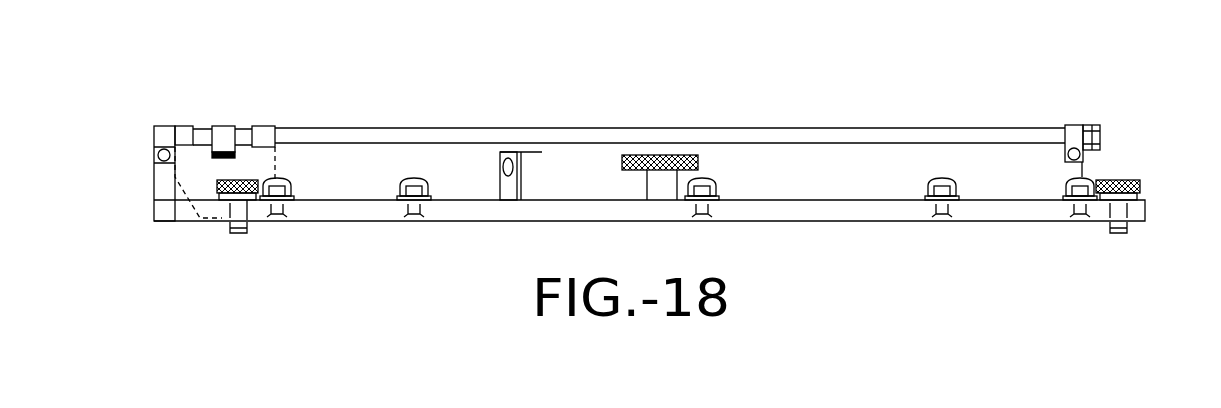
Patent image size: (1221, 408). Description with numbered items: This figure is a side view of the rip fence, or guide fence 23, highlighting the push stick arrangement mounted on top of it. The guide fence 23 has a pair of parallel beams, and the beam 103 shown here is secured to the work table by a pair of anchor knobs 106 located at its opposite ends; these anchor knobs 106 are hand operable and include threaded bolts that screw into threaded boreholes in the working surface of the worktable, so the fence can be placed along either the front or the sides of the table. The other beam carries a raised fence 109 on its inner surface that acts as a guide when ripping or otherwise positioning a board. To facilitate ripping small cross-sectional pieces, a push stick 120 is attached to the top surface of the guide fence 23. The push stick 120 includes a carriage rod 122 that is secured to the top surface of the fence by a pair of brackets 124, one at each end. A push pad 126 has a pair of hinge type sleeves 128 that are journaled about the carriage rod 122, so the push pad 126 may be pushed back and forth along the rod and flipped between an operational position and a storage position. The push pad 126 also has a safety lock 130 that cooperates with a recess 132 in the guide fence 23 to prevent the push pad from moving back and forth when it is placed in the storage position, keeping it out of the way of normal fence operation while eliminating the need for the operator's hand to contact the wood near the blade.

The guide fence 23 is at (833, 97).
The beam 103 is at (825, 212).
The anchor knobs 106 is at (246, 197).
The raised fence 109 is at (1058, 173).
The push stick 120 is at (143, 153).
The carriage rod 122 is at (443, 137).
The brackets 124 is at (161, 127).
The push pad 126 is at (250, 167).
The hinge type sleeves 128 is at (267, 128).
The safety lock 130 is at (225, 128).
The recess 132 is at (223, 158).